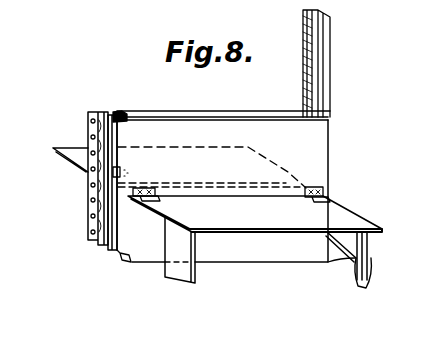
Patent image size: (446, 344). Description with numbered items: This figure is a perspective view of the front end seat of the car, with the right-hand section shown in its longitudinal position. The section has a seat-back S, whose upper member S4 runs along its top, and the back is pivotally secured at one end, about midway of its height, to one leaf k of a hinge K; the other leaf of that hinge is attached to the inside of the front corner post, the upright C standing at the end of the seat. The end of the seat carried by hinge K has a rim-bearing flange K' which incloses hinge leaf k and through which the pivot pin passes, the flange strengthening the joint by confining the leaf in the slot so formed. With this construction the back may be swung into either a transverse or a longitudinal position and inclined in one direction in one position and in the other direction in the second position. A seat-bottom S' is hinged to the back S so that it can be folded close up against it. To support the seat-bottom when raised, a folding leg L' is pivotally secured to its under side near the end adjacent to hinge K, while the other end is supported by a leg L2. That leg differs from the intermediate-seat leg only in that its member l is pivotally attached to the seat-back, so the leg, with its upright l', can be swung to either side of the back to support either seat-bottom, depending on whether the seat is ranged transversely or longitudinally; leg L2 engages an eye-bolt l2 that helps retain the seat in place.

The corner post C is at (323, 56).
The top rail of shelf frame S4 is at (205, 118).
The hinge leaf k is at (117, 112).
The seat-back S is at (222, 191).
The hinge K is at (80, 176).
The rim-bearing flange K' is at (104, 182).
The seat-bottom S' is at (217, 189).
The folding leg L' is at (198, 258).
The member of leg L2 l is at (331, 258).
The leg l' is at (375, 251).
The eye-bolt l2 is at (360, 280).
The leg L2 is at (381, 260).